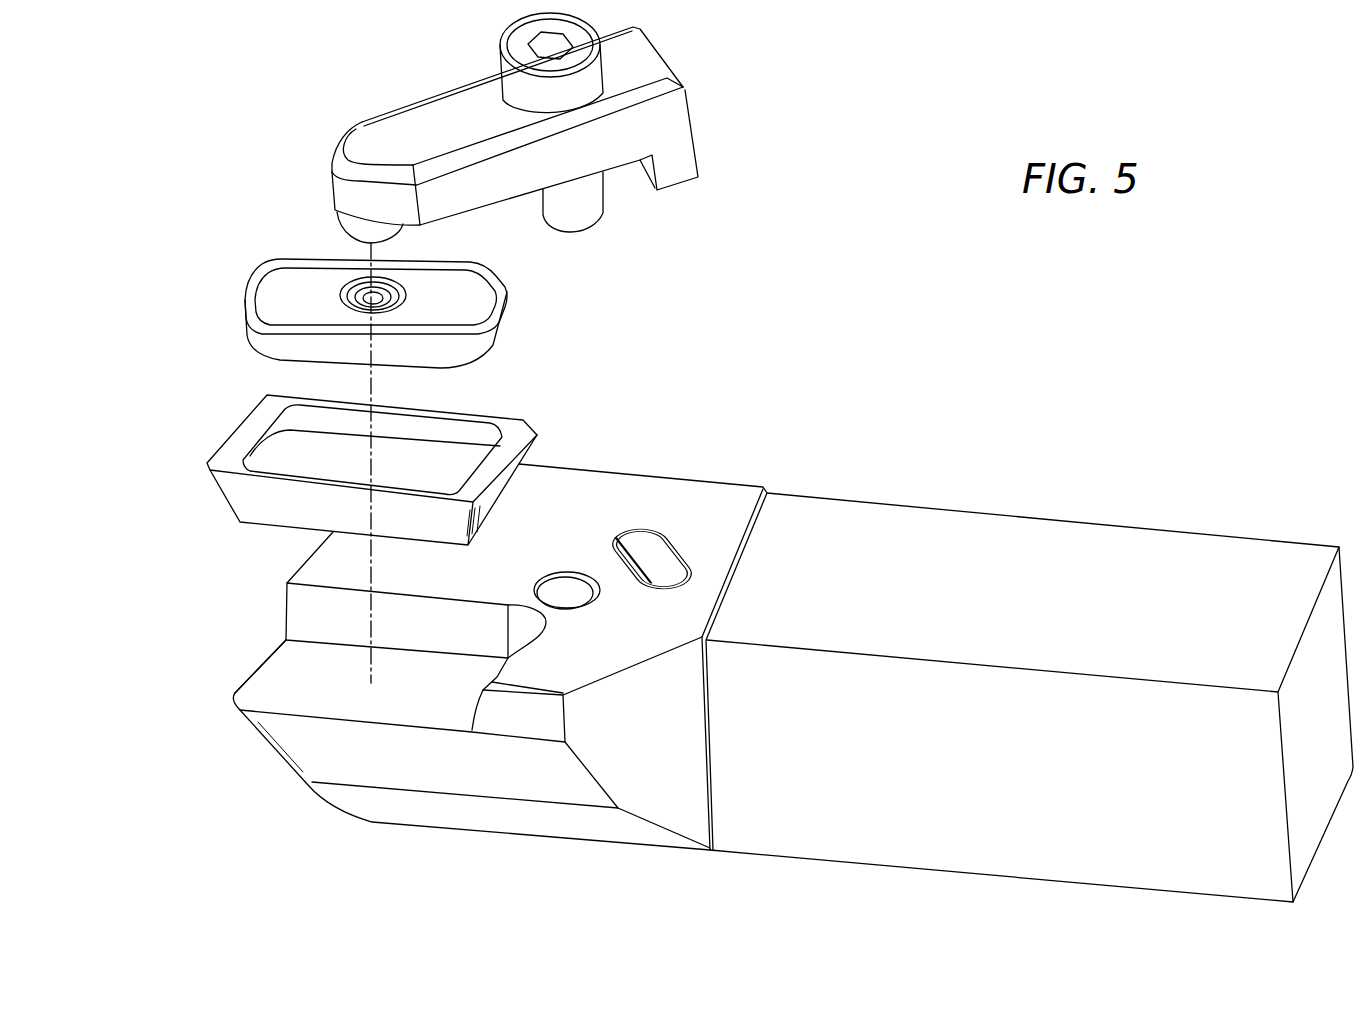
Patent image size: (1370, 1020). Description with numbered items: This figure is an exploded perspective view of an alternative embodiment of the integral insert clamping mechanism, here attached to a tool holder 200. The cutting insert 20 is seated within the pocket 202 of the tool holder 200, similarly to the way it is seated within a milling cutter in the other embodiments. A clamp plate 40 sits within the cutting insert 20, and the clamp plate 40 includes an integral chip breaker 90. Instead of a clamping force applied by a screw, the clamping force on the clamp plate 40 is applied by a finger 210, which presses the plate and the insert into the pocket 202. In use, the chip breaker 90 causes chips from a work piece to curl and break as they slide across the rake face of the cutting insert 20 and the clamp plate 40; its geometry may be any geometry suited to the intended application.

The cutting insert 20 is at (215, 418).
The clamp plate 40 is at (342, 277).
The chip breaker 90 is at (297, 253).
The tool holder 200 is at (776, 660).
The pocket 202 is at (278, 667).
The finger 210 is at (362, 101).